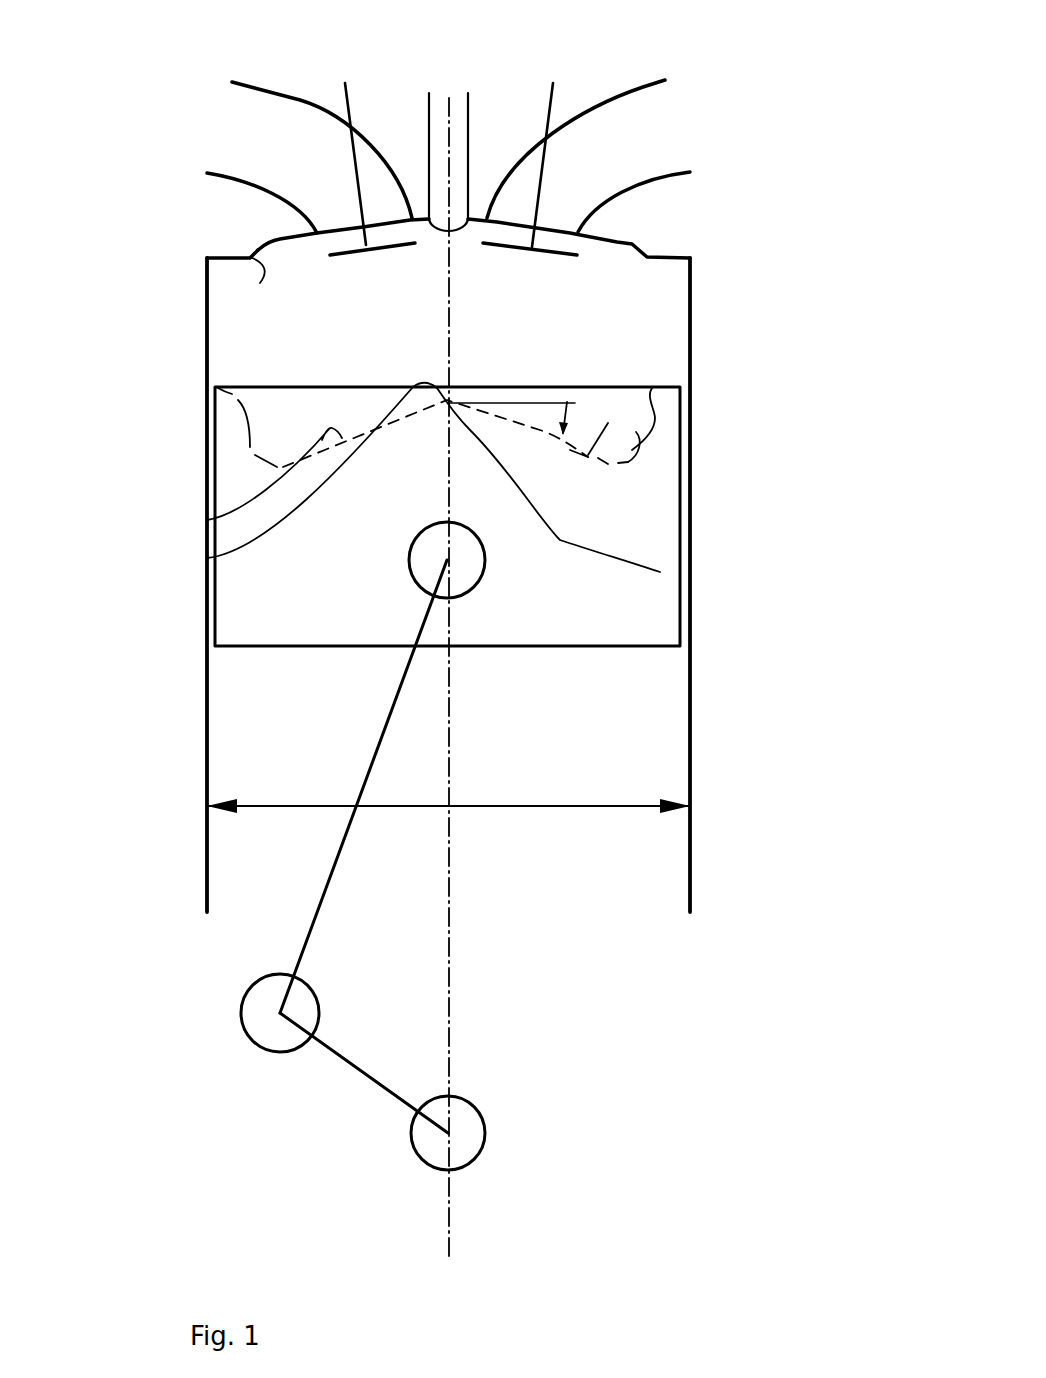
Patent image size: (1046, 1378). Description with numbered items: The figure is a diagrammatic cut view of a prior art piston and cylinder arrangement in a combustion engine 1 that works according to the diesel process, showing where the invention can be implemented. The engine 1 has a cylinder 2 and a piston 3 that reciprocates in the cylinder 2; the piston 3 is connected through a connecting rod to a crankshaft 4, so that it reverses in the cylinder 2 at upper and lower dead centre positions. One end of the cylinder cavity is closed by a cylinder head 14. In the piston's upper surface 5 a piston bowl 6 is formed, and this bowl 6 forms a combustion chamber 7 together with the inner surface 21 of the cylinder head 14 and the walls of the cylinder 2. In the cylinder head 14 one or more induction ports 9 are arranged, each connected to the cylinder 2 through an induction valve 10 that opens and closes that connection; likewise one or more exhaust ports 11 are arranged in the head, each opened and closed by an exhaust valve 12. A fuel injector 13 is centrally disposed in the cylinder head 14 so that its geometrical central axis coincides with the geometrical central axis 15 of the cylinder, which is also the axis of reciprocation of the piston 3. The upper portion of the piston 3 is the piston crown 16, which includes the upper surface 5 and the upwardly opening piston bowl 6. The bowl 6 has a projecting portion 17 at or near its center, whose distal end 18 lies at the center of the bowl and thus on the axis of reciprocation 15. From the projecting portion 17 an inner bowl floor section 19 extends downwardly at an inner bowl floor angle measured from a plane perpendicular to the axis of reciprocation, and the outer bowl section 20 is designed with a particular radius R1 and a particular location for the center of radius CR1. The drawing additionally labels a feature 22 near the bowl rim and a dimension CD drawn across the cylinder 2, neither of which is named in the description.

The combustion engine 1 is at (613, 62).
The cylinder 2 is at (667, 279).
The piston 3 is at (667, 523).
The crankshaft 4 is at (487, 1127).
The upper surface 5 is at (613, 387).
The piston bowl 6 is at (637, 457).
The combustion chamber 7 is at (280, 443).
The induction port 9 is at (646, 82).
The induction valve 10 is at (557, 257).
The exhaust port 11 is at (262, 85).
The exhaust valve 12 is at (333, 260).
The fuel injector 13 is at (443, 228).
The cylinder head 14 is at (277, 242).
The geometrical central axis 15 is at (450, 1055).
The piston crown 16 is at (680, 385).
The projecting portion 17 is at (660, 572).
The distal end 18 is at (207, 558).
The inner bowl floor section 19 is at (207, 520).
The outer bowl section 20 is at (250, 447).
The inner surface 21 is at (262, 279).
The bowl edge 22 is at (648, 390).
The cylinder diameter CD is at (628, 805).
The radius R1 is at (588, 457).
The center of radius CR1 is at (624, 455).